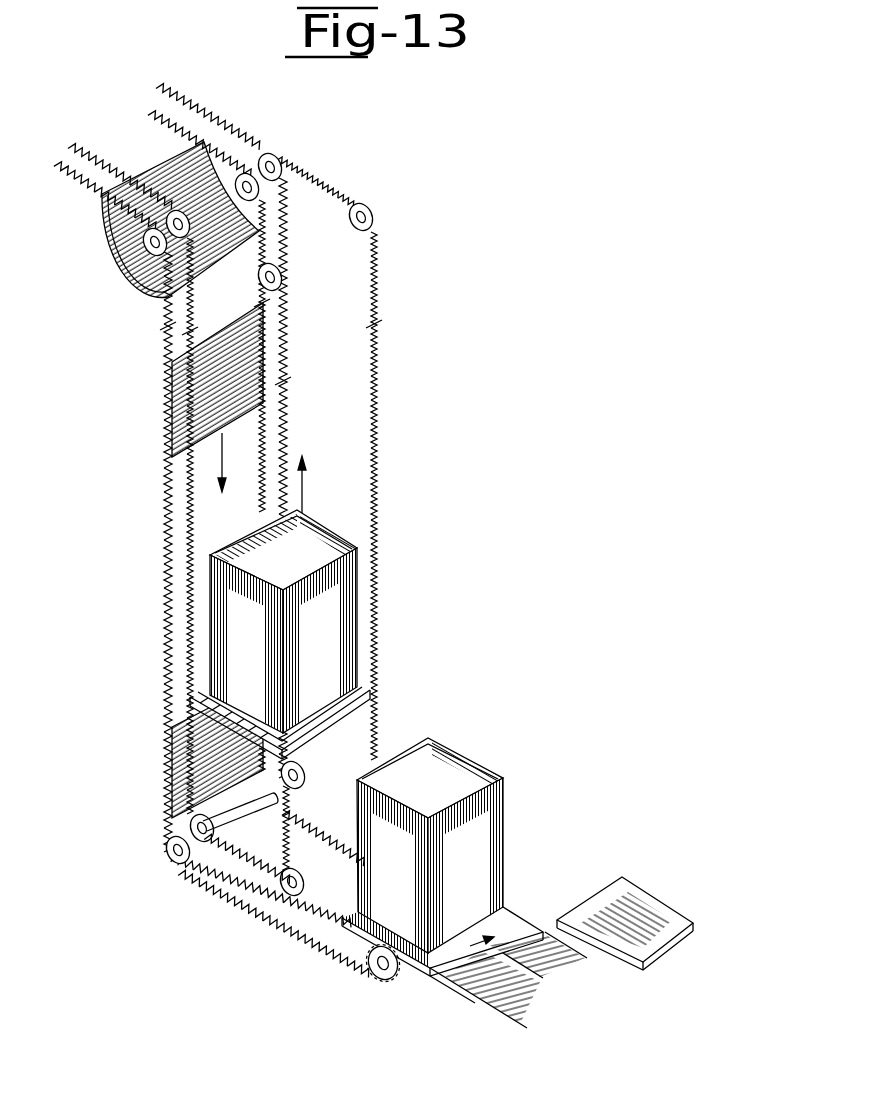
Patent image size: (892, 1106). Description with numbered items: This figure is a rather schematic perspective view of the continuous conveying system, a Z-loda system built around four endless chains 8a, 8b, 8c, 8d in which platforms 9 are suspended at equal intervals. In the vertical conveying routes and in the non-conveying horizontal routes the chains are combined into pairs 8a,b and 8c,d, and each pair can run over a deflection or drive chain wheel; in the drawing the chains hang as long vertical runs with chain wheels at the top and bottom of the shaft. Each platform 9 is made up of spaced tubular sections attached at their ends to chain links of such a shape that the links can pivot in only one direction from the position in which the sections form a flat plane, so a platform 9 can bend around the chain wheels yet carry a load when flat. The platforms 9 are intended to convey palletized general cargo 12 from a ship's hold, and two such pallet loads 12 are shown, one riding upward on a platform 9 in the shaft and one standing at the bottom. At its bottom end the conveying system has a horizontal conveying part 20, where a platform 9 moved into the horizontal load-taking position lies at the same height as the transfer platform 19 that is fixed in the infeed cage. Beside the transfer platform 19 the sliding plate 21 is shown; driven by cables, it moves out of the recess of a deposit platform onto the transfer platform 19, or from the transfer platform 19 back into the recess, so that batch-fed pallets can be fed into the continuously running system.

The pair of endless chains 8a,b is at (238, 128).
The pair of endless chains 8c,d is at (104, 168).
The endless chain 8a is at (376, 400).
The endless chain 8b is at (305, 807).
The endless chain 8c is at (285, 428).
The endless chain 8d is at (185, 518).
The platform 9 is at (143, 276).
The palletized general cargo 12 is at (345, 618).
The transfer platform 19 is at (457, 975).
The horizontal conveying part 20 is at (313, 912).
The sliding plate 21 is at (594, 903).